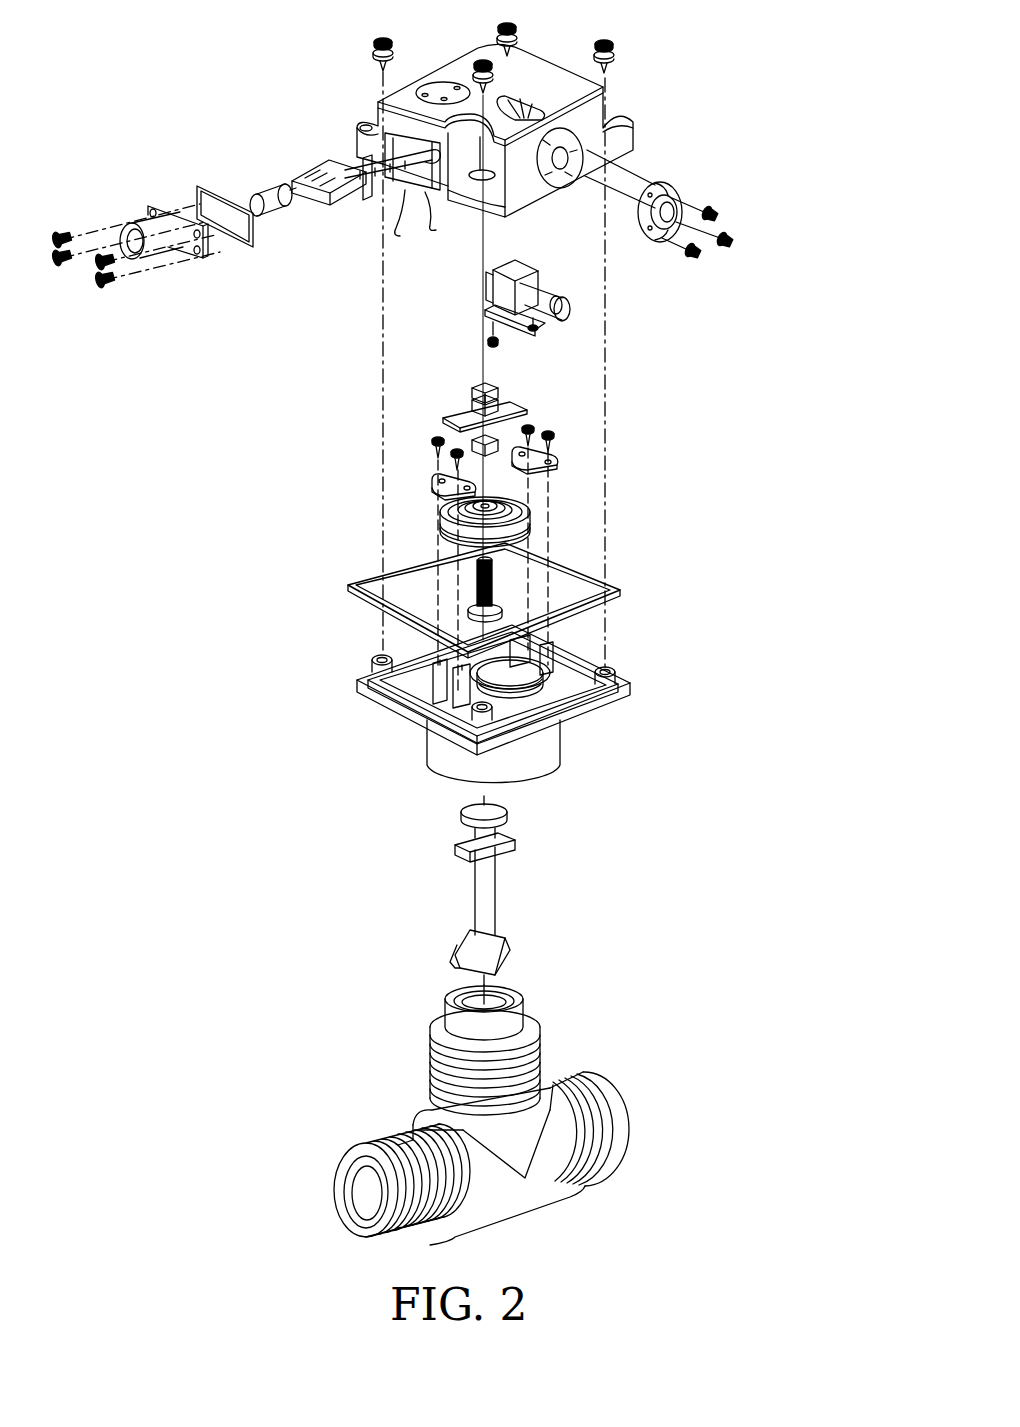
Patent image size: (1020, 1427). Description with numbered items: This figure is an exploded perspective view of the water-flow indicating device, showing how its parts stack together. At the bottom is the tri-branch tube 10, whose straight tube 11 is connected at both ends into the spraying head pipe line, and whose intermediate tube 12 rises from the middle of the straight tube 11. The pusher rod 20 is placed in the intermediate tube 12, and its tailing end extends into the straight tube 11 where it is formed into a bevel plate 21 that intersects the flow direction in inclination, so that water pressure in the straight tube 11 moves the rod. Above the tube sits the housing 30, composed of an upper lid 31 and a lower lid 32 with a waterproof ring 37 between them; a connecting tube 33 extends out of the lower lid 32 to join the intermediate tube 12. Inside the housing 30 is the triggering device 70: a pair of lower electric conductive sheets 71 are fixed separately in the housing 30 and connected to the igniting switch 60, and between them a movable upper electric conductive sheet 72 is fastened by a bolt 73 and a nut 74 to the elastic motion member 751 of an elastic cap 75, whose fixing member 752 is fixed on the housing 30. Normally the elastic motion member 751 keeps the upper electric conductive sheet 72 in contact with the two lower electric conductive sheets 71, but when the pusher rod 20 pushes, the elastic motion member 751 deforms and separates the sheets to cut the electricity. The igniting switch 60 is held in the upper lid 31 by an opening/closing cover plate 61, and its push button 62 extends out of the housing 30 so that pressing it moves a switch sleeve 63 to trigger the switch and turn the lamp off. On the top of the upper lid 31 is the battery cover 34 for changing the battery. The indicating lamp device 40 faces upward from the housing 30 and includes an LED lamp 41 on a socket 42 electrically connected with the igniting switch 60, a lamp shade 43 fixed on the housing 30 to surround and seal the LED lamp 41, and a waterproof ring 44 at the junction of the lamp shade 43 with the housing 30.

The tri-branch tube 10 is at (625, 1078).
The straight tube 11 is at (545, 1193).
The intermediate tube 12 is at (540, 1040).
The pusher rod 20 is at (495, 897).
The bevel plate 21 is at (503, 960).
The housing 30 is at (750, 55).
The upper lid 31 is at (553, 72).
The lower lid 32 is at (630, 678).
The connecting tube 33 is at (553, 745).
The battery cover 34 is at (437, 88).
The waterproof ring 37 is at (622, 596).
The indicating lamp device 40 is at (240, 268).
The LED lamp 41 is at (267, 200).
The socket 42 is at (330, 200).
The lamp shade 43 is at (143, 225).
The waterproof ring 44 is at (200, 188).
The igniting switch 60 is at (545, 258).
The opening/closing cover plate 61 is at (520, 330).
The push button 62 is at (668, 195).
The switch sleeve 63 is at (568, 310).
The triggering device 70 is at (428, 505).
The lower electric conductive sheets 71 is at (435, 475).
The movable upper electric conductive sheet 72 is at (500, 398).
The bolt 73 is at (478, 580).
The nut 74 is at (462, 412).
The elastic cap 75 is at (538, 520).
The elastic motion member 751 is at (538, 496).
The fixing member 752 is at (445, 528).